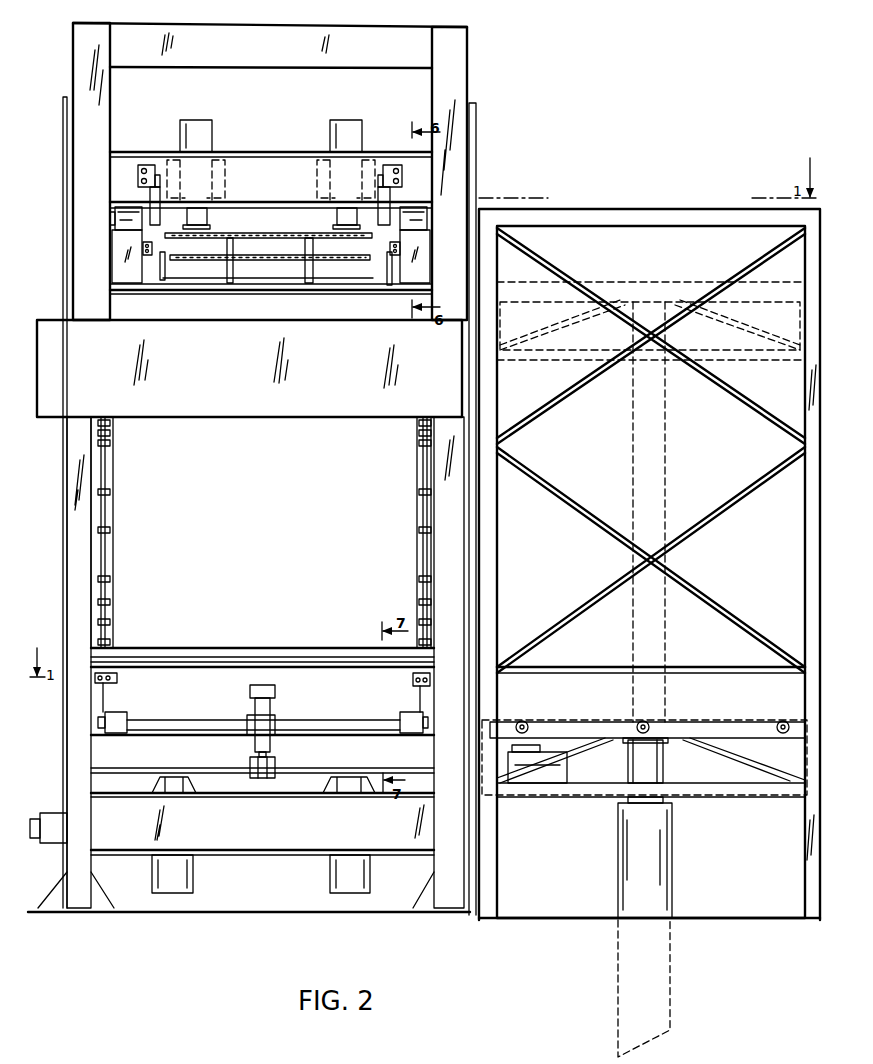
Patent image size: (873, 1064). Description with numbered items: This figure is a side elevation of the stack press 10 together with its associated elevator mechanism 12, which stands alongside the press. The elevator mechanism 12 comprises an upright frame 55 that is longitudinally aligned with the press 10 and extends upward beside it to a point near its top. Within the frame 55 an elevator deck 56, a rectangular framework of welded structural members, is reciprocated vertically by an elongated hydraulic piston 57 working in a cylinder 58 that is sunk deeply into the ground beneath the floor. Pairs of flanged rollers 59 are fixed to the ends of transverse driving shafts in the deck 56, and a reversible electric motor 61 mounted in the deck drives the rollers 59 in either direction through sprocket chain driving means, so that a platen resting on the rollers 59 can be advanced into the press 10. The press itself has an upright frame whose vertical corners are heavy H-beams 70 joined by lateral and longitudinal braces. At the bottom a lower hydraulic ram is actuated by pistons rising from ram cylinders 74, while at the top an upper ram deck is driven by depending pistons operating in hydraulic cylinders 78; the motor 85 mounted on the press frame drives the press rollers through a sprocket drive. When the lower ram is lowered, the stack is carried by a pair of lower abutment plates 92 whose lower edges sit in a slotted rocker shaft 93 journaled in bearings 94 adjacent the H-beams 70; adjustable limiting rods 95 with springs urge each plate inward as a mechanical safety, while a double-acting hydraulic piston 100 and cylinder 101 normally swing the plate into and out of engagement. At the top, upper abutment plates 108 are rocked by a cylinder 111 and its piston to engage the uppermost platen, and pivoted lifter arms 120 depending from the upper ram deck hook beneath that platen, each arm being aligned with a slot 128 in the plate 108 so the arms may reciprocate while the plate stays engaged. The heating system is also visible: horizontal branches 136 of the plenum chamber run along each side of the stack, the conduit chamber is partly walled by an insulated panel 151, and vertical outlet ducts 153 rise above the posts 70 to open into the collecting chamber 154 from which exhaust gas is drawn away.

The press 10 is at (483, 82).
The elevator mechanism 12 is at (661, 190).
The upright frame 55 is at (712, 220).
The elevator deck 56 is at (691, 731).
The hydraulic piston 57 is at (650, 772).
The cylinder 58 is at (650, 880).
The flanged rollers 59 is at (527, 721).
The reversible electric motor 61 is at (567, 766).
The H-beams 70 is at (77, 892).
The ram cylinders 74 is at (175, 884).
The hydraulic cylinders 78 is at (330, 130).
The motor 85 is at (52, 822).
The lower abutment plates 92 is at (322, 701).
The rocker shaft 93 is at (336, 725).
The bearings 94 is at (109, 726).
The adjustable limiting rods 95 is at (115, 682).
The hydraulic piston 100 is at (268, 762).
The cylinder 101 is at (256, 708).
The upper abutment plates 108 is at (130, 260).
The cylinder 111 is at (150, 199).
The lifter arms 120 is at (308, 283).
The slot 128 is at (161, 281).
The horizontal branches 136 is at (228, 371).
The insulated panel 151 is at (289, 512).
The vertical outlet ducts 153 is at (98, 116).
The collecting chamber 154 is at (248, 35).